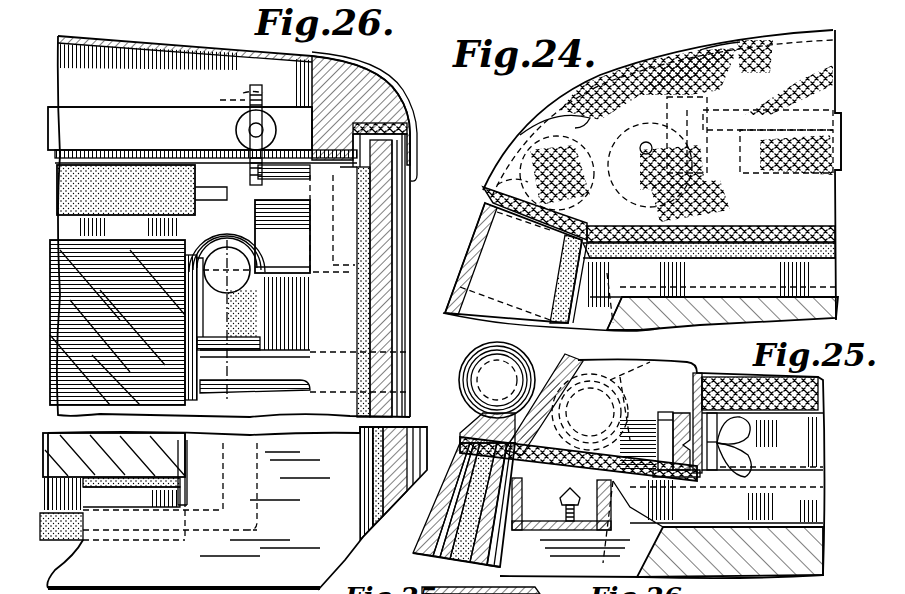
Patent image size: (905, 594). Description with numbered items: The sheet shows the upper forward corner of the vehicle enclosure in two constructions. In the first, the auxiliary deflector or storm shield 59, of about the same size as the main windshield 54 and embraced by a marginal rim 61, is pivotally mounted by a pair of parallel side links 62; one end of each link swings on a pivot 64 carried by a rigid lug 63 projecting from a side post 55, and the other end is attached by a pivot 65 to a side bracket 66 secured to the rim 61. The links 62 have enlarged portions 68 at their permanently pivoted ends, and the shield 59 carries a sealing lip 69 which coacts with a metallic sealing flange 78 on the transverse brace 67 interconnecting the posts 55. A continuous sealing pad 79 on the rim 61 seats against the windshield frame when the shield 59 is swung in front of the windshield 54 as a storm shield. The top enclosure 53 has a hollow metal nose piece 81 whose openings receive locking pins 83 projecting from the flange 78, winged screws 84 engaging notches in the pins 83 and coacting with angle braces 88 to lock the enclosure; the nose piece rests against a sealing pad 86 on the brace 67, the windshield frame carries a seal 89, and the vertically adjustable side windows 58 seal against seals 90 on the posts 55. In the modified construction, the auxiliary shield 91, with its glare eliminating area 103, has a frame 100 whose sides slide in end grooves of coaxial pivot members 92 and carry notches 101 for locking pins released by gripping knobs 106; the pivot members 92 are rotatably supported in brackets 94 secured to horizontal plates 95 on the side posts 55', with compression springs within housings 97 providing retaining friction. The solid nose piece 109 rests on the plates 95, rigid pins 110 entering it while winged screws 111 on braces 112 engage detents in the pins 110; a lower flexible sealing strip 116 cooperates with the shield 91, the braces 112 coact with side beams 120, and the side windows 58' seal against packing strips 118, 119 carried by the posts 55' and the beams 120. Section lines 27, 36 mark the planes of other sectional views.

In FIG. 26, the section line 27 is at (122, 190).
In FIG. 26, the section line 36 is at (221, 187).
In FIG. 26, the top enclosure 53 is at (213, 70).
In FIG. 24, the top enclosure 53 is at (723, 71).
In FIG. 25, the top enclosure 53 is at (818, 386).
In FIG. 25, the main windshield 54 is at (507, 562).
In FIG. 24, the side posts 55 is at (471, 273).
In FIG. 26, the side posts 55' is at (233, 508).
In FIG. 24, the side windows 58 is at (722, 328).
In FIG. 25, the side windows 58 is at (730, 552).
In FIG. 26, the side windows 58' is at (413, 278).
In FIG. 25, the auxiliary deflector or storm shield 59 is at (415, 560).
In FIG. 24, the marginal rim 61 is at (725, 186).
In FIG. 24, the side links 62 is at (558, 122).
In FIG. 25, the side links 62 is at (550, 372).
In FIG. 24, the rigid lugs 63 is at (525, 275).
In FIG. 25, the rigid lugs 63 is at (645, 367).
In FIG. 24, the pivots 64 is at (512, 162).
In FIG. 24, the pivots 65 is at (650, 161).
In FIG. 24, the side brackets 66 is at (768, 141).
In FIG. 25, the transverse brace 67 is at (540, 440).
In FIG. 24, the enlarged portions 68 is at (505, 178).
In FIG. 24, the sealing lip 69 is at (687, 135).
In FIG. 24, the metallic sealing flange 78 is at (627, 257).
In FIG. 25, the metallic sealing flange 78 is at (698, 488).
In FIG. 24, the continuous sealing pad 79 is at (833, 118).
In FIG. 25, the continuous sealing pad 79 is at (497, 440).
In FIG. 24, the hollow metal nose piece 81 is at (732, 56).
In FIG. 25, the hollow metal nose piece 81 is at (695, 366).
In FIG. 25, the locking pins 83 is at (685, 410).
In FIG. 25, the winged screws 84 is at (746, 446).
In FIG. 25, the sealing pad 86 is at (545, 462).
In FIG. 25, the angle braces 88 is at (795, 462).
In FIG. 25, the seal 89 is at (540, 485).
In FIG. 24, the seals 90 is at (712, 255).
In FIG. 26, the auxiliary shield 91 is at (114, 460).
In FIG. 26, the coaxial pivot members 92 is at (227, 240).
In FIG. 26, the brackets 94 is at (290, 185).
In FIG. 26, the horizontal plates 95 is at (227, 173).
In FIG. 26, the housings 97 is at (282, 275).
In FIG. 26, the frame 100 is at (190, 440).
In FIG. 26, the notches 101 is at (226, 490).
In FIG. 26, the glare eliminating area 103 is at (117, 403).
In FIG. 26, the gripping knobs 106 is at (232, 282).
In FIG. 25, the solid nose piece 109 is at (470, 586).
In FIG. 26, the rigid pins 110 is at (232, 90).
In FIG. 26, the winged screws 111 is at (258, 85).
In FIG. 26, the braces 112 is at (155, 102).
In FIG. 26, the lower flexible sealing strip 116 is at (103, 177).
In FIG. 26, the packing strip 118 is at (377, 245).
In FIG. 26, the packing strip 119 is at (426, 117).
In FIG. 26, the side beams 120 is at (348, 80).